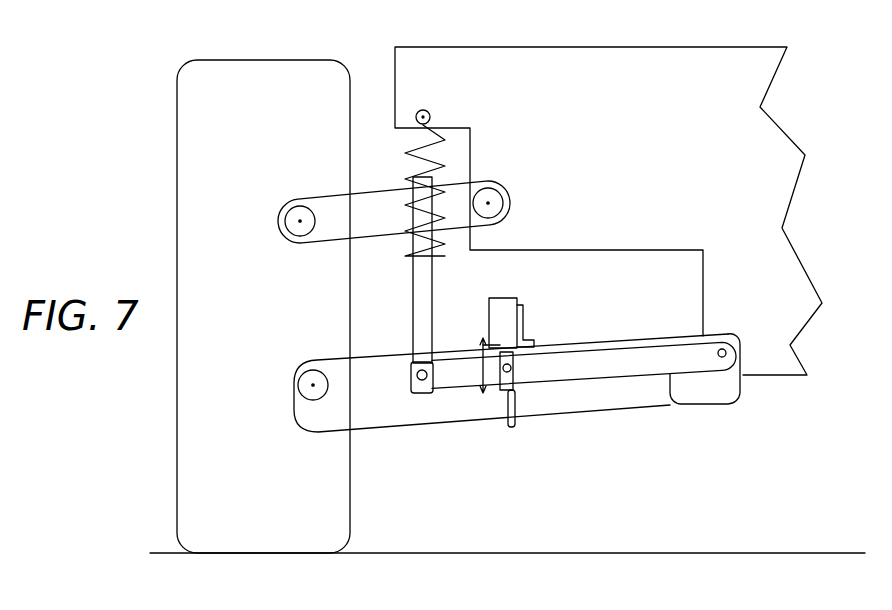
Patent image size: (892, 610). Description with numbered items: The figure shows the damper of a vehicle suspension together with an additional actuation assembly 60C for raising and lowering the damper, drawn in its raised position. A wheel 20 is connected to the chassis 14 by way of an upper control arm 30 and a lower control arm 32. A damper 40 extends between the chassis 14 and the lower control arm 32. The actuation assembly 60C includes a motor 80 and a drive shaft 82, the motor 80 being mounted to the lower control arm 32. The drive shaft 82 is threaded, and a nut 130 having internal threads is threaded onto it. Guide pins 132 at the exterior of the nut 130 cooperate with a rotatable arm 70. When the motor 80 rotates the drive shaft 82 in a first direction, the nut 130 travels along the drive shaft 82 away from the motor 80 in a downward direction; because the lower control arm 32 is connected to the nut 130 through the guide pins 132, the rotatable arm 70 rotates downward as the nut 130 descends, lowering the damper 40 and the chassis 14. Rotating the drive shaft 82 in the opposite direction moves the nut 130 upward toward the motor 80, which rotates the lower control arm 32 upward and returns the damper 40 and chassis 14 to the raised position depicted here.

The chassis 14 is at (677, 40).
The wheel 20 is at (177, 158).
The upper control arm 30 is at (385, 192).
The lower control arm 32 is at (377, 432).
The damper 40 is at (413, 323).
The actuation assembly 60C is at (470, 328).
The rotatable arm 70 is at (673, 403).
The motor 80 is at (520, 310).
The drive shaft 82 is at (517, 400).
The nut 130 is at (492, 393).
The guide pins 132 is at (513, 369).